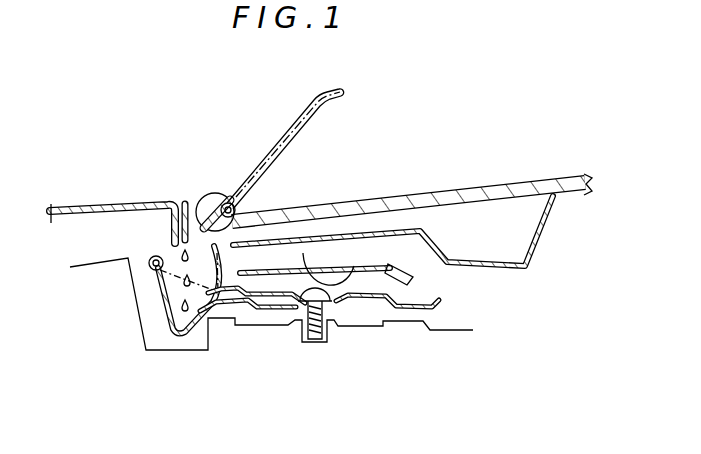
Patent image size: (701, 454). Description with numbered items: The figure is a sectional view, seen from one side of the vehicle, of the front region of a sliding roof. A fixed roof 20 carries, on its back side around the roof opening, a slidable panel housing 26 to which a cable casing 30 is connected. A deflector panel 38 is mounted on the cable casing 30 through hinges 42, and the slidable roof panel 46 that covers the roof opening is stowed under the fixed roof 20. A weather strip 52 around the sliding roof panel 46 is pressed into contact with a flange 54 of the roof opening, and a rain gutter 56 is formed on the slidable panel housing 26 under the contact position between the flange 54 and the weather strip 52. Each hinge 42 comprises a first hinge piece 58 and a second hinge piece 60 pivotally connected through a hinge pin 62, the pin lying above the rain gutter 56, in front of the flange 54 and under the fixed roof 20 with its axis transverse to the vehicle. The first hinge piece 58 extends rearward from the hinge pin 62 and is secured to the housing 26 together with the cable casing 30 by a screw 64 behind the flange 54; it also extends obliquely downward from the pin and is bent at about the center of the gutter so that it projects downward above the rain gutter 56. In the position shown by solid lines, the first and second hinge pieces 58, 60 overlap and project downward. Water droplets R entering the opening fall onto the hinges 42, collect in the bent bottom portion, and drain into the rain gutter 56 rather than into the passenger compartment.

The fixed roof 20 is at (103, 207).
The slidable panel housing 26 is at (452, 332).
The cable casing 30 is at (417, 301).
The deflector panel 38 is at (268, 145).
The hinge 42 is at (155, 310).
The slidable roof panel 46 is at (461, 189).
The weather strip 52 is at (187, 203).
The flange 54 is at (203, 200).
The rain gutter 56 is at (208, 343).
The first hinge piece 58 is at (163, 328).
The second hinge piece 60 is at (357, 267).
The hinge pin 62 is at (150, 270).
The screw 64 is at (333, 302).
The water droplets R is at (183, 252).